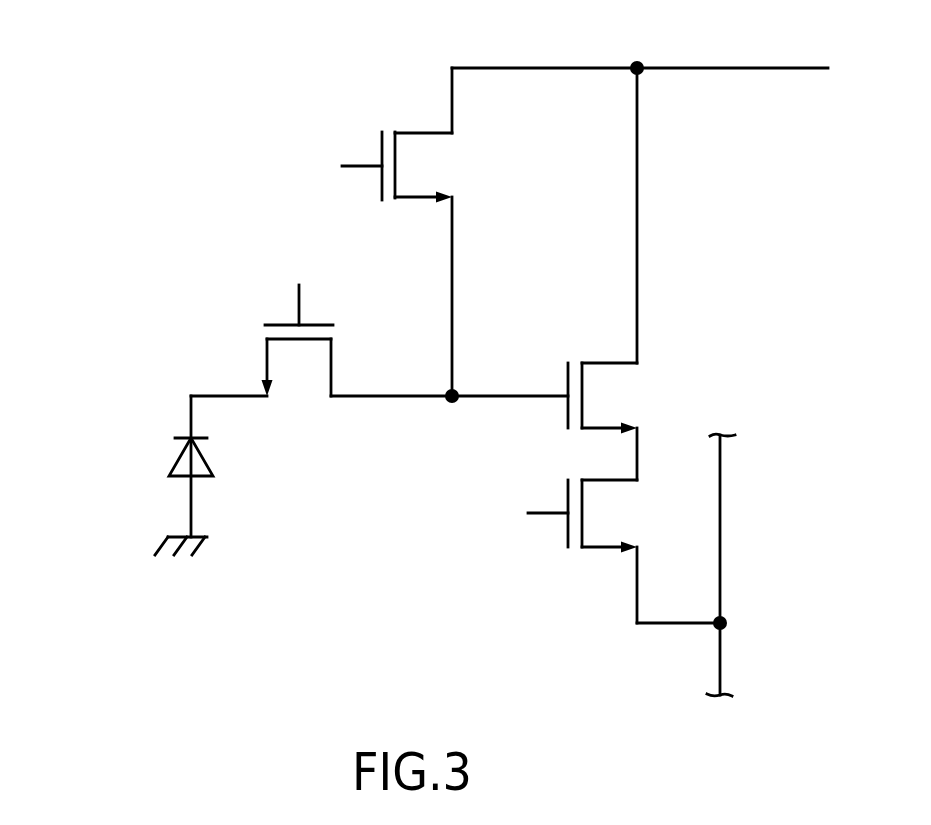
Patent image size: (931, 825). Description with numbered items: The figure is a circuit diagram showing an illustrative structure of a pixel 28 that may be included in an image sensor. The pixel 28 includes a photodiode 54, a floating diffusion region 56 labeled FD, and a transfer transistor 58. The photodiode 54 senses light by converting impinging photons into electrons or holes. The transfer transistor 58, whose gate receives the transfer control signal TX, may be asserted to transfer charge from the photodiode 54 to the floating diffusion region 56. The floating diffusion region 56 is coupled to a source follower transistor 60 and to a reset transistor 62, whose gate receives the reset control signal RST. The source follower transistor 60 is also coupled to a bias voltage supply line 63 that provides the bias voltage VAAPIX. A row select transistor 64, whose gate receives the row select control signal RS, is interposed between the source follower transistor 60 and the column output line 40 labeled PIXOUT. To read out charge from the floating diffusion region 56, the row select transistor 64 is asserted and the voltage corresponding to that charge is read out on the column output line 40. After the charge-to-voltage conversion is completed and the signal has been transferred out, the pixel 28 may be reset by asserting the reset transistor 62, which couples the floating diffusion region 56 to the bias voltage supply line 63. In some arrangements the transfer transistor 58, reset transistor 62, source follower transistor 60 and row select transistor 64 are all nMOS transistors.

The pixel 28 is at (103, 142).
The photodiode 54 is at (120, 472).
The transfer transistor 58 is at (308, 426).
The floating diffusion region 56 is at (437, 437).
The reset transistor 62 is at (496, 172).
The bias voltage supply line 63 is at (682, 68).
The source follower transistor 60 is at (667, 387).
The row select transistor 64 is at (663, 490).
The column output line 40 is at (720, 500).